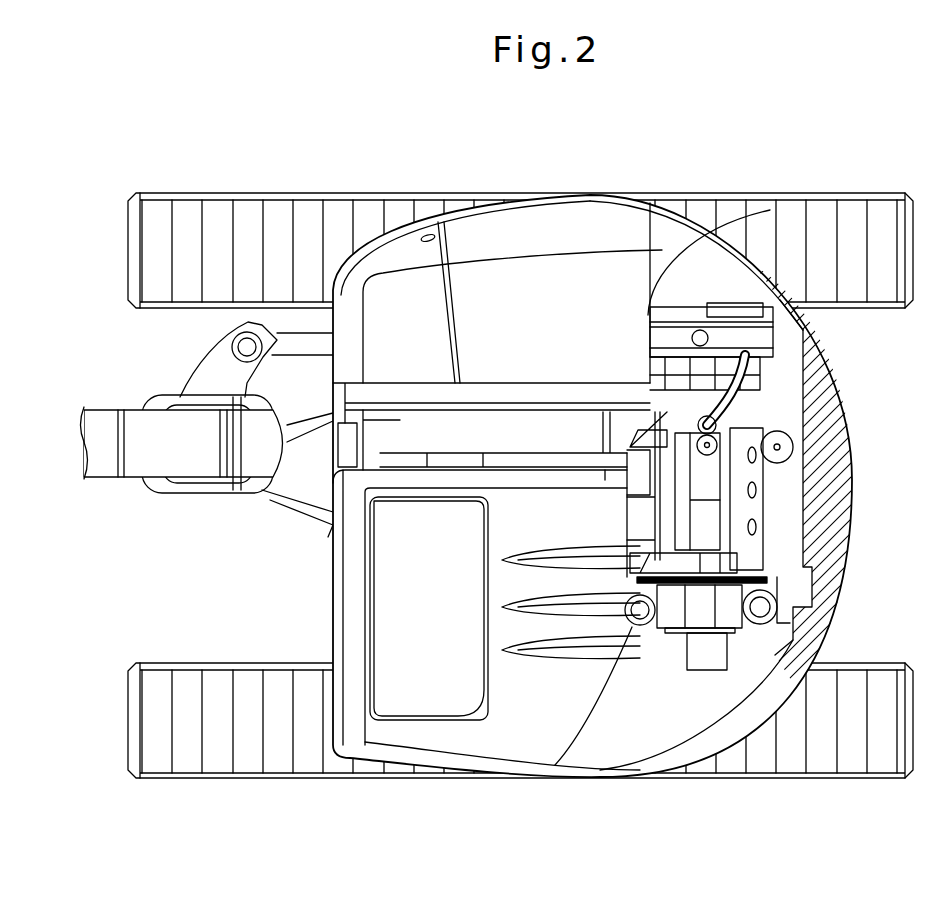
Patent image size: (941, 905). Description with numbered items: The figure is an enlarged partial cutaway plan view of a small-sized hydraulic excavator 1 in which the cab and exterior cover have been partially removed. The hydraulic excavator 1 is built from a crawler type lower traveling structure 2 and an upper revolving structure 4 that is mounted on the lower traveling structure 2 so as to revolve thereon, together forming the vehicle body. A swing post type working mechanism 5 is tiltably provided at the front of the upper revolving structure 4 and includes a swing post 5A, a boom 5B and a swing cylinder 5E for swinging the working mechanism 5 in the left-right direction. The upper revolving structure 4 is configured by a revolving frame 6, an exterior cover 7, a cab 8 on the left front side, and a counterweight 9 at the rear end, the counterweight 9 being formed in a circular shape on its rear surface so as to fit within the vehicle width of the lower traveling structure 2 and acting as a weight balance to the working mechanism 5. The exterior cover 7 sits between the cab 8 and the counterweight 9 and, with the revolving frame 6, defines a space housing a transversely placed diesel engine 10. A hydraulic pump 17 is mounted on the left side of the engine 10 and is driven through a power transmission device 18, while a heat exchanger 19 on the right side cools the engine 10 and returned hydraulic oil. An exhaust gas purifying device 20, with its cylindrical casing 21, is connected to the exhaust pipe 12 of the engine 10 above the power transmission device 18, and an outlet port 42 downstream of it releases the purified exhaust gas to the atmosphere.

The hydraulic excavator 1 is at (494, 171).
The lower traveling structure 2 is at (127, 241).
The upper revolving structure 4 is at (665, 196).
The working mechanism 5 is at (91, 409).
The swing post 5A is at (172, 393).
The boom 5B is at (98, 462).
The swing cylinder 5E is at (297, 345).
The revolving frame 6 is at (752, 262).
The exterior cover 7 is at (601, 236).
The cab 8 is at (500, 737).
The counterweight 9 is at (832, 428).
The engine 10 is at (750, 510).
The exhaust pipe 12 is at (632, 605).
The hydraulic pump 17 is at (700, 615).
The power transmission device 18 is at (680, 629).
The heat exchanger 19 is at (758, 335).
The exhaust gas purifying device 20 is at (735, 640).
The casing 21 is at (718, 660).
The outlet port 42 is at (764, 603).